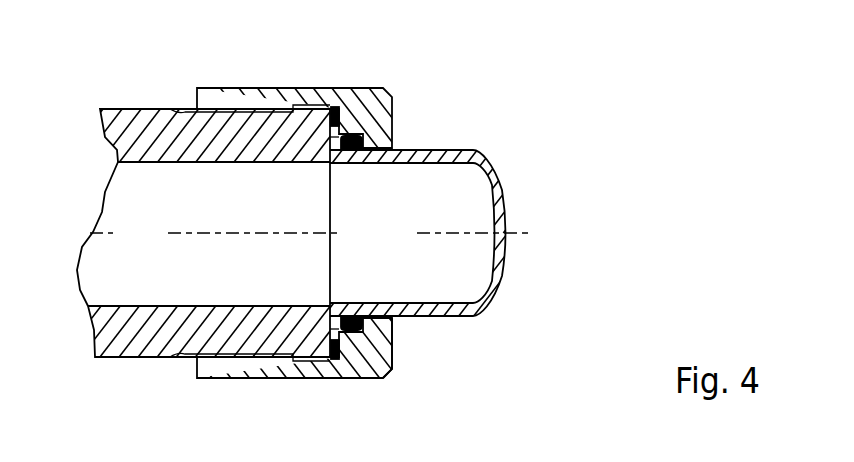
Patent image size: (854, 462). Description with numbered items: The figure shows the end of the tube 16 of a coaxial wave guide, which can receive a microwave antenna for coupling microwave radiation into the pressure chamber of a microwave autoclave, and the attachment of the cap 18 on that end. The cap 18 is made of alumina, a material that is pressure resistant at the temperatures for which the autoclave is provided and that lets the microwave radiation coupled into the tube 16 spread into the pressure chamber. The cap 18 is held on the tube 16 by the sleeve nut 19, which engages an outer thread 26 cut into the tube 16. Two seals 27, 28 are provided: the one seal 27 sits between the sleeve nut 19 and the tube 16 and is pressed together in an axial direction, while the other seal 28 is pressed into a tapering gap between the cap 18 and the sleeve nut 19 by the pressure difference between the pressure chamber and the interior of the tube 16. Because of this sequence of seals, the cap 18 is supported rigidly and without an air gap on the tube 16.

The tube 16 is at (160, 125).
The cap 18 is at (493, 302).
The sleeve nut 19 is at (395, 372).
The outer thread 26 is at (175, 360).
The seal 27 is at (355, 87).
The seal 28 is at (363, 137).